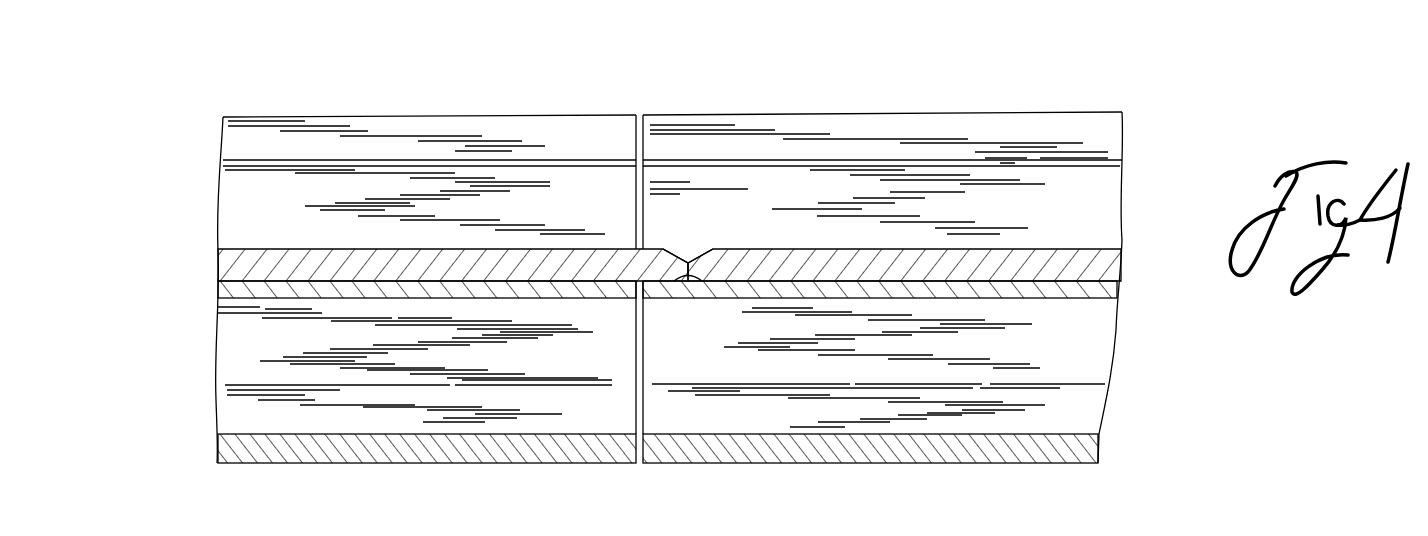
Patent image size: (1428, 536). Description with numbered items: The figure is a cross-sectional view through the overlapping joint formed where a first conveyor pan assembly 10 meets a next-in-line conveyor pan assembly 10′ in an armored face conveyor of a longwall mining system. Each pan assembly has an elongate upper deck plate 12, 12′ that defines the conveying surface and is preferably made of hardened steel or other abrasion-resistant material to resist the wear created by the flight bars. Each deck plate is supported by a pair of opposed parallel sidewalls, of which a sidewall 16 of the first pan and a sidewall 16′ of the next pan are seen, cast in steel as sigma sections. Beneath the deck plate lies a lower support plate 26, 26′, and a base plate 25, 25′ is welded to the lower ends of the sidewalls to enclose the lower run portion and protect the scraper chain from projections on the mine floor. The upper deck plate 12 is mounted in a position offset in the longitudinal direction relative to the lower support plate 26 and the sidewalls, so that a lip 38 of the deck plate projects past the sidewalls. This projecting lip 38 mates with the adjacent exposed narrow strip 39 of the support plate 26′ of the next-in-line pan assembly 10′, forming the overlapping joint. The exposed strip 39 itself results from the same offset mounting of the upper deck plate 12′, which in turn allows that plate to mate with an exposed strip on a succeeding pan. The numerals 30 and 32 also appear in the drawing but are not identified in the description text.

The conveyor pan assembly 10 is at (341, 103).
The next-in-line conveyor pan assembly 10′ is at (935, 102).
The sidewall 16 is at (505, 122).
The sidewall of next-in-line pan assembly 16′ is at (692, 130).
The upper deck plate 12 is at (215, 270).
The upper deck plate of next-in-line pan assembly 12′ is at (1112, 264).
The lower support plate 26 is at (218, 293).
The support plate of next-in-line pan assembly 26′ is at (1108, 291).
The base plate 25 is at (414, 462).
The base plate of next-in-line pan assembly 25′ is at (888, 445).
The lip 38 is at (668, 268).
The exposed narrow strip 39 is at (708, 283).
The substrate 30 is at (1022, 535).
The adhesive 32 is at (1090, 535).